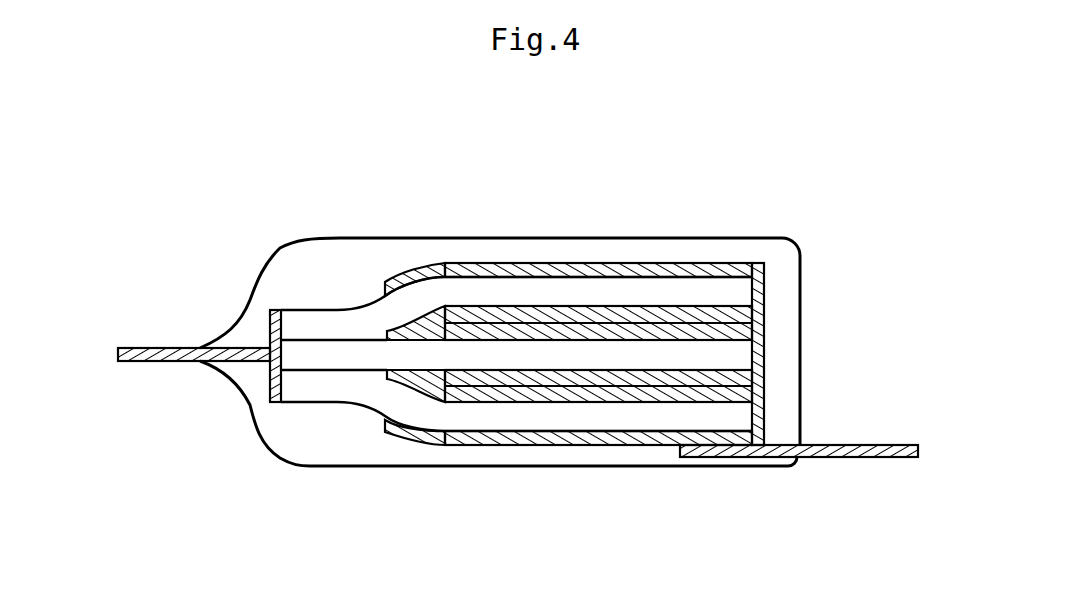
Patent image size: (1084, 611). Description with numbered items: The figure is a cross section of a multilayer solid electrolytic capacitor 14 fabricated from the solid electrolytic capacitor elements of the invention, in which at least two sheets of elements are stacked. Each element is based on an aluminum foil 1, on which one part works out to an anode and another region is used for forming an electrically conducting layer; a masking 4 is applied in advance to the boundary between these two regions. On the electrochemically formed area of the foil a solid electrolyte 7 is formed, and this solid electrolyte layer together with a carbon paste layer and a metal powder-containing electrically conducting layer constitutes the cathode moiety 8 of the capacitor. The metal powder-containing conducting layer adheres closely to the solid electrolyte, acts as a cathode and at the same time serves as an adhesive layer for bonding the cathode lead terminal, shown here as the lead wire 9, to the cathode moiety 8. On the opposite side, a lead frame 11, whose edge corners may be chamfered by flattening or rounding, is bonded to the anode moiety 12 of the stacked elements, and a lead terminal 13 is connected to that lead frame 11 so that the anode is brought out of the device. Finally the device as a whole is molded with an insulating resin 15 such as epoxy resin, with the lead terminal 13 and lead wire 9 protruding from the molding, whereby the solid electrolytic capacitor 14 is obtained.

The aluminum foil 1 is at (502, 290).
The masking 4 is at (432, 268).
The solid electrolyte 7 is at (612, 273).
The cathode moiety 8 is at (568, 460).
The cathode lead terminal 9 is at (853, 459).
The lead frame 11 is at (270, 410).
The anode moiety 12 is at (348, 390).
The lead terminal 13 is at (182, 364).
The solid electrolytic capacitor 14 is at (750, 226).
The insulating resin 15 is at (780, 258).